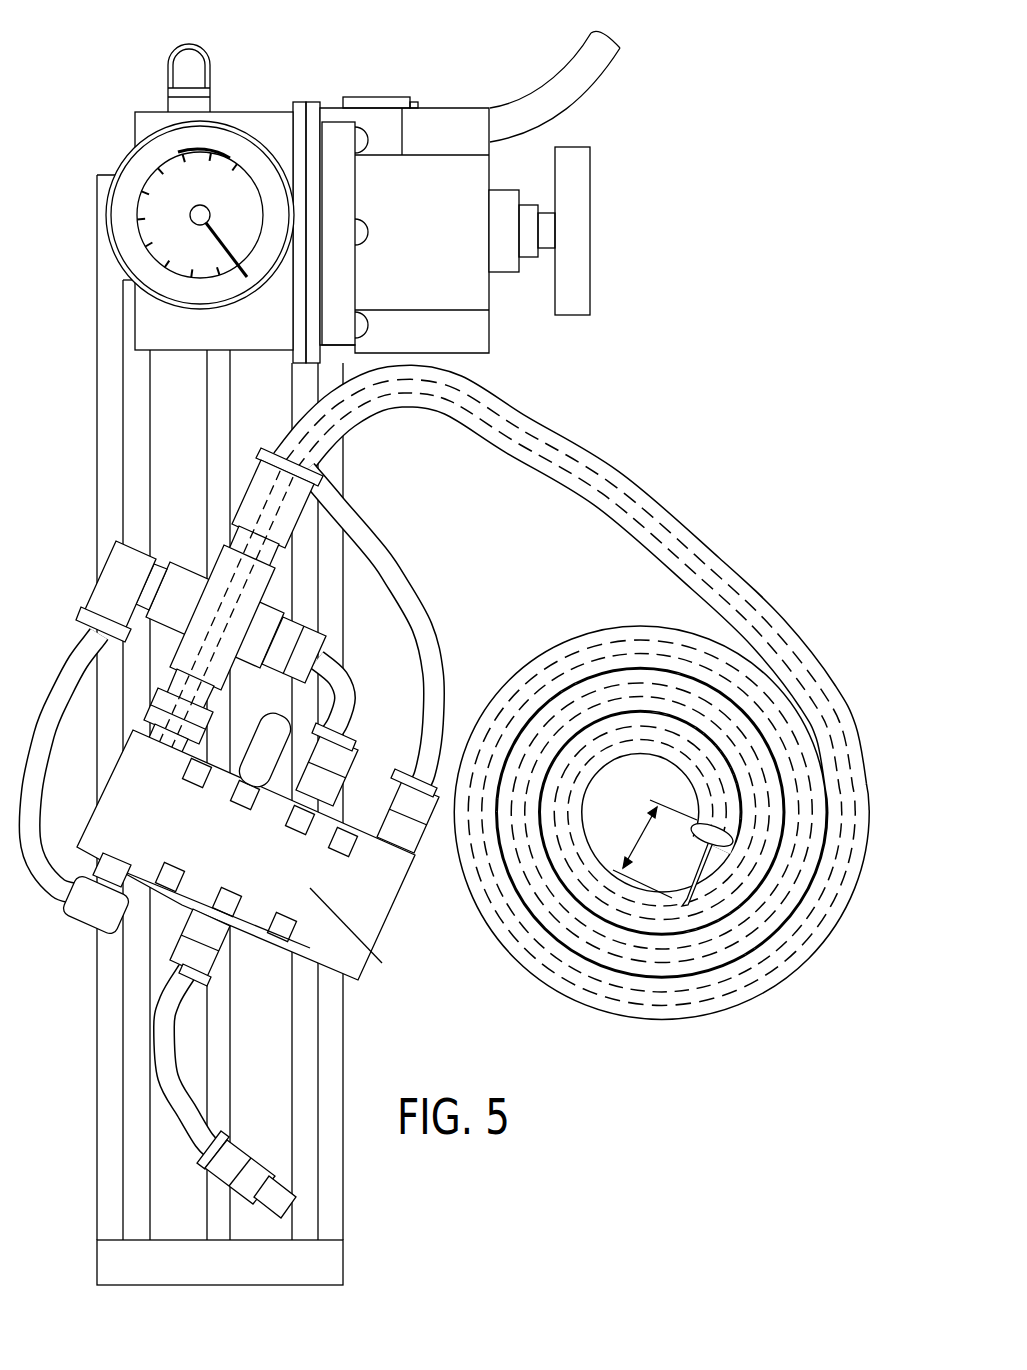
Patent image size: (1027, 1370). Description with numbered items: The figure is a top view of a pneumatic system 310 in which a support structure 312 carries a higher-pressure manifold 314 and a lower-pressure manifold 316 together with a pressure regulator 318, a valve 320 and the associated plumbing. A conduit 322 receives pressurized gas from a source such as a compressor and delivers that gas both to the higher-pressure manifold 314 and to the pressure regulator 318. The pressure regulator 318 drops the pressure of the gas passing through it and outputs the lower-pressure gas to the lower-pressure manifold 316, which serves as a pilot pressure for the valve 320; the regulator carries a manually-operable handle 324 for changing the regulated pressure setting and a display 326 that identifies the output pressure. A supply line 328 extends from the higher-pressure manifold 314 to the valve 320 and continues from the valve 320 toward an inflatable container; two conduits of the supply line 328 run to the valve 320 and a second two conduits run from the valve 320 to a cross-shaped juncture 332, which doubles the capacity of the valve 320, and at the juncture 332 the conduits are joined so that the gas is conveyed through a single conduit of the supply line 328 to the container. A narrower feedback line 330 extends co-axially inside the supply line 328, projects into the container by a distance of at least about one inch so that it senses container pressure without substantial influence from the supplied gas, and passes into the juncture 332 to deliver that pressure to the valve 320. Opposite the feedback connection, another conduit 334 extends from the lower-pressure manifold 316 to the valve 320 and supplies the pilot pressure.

The pneumatic system 310 is at (124, 76).
The support structure 312 is at (95, 1125).
The higher-pressure manifold 314 is at (265, 1095).
The lower-pressure manifold 316 is at (170, 447).
The pressure regulator 318 is at (346, 76).
The valve 320 is at (320, 890).
The conduit 322 is at (542, 88).
The handle 324 is at (585, 185).
The display 326 is at (233, 147).
The supply line 328 is at (603, 458).
The feedback line 330 is at (540, 456).
The cross-shaped juncture 332 is at (190, 545).
The conduit 334 is at (437, 690).